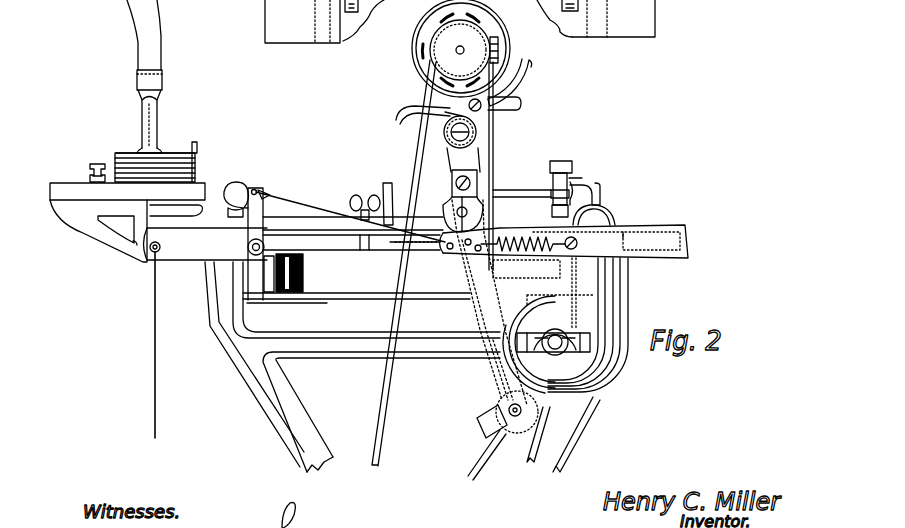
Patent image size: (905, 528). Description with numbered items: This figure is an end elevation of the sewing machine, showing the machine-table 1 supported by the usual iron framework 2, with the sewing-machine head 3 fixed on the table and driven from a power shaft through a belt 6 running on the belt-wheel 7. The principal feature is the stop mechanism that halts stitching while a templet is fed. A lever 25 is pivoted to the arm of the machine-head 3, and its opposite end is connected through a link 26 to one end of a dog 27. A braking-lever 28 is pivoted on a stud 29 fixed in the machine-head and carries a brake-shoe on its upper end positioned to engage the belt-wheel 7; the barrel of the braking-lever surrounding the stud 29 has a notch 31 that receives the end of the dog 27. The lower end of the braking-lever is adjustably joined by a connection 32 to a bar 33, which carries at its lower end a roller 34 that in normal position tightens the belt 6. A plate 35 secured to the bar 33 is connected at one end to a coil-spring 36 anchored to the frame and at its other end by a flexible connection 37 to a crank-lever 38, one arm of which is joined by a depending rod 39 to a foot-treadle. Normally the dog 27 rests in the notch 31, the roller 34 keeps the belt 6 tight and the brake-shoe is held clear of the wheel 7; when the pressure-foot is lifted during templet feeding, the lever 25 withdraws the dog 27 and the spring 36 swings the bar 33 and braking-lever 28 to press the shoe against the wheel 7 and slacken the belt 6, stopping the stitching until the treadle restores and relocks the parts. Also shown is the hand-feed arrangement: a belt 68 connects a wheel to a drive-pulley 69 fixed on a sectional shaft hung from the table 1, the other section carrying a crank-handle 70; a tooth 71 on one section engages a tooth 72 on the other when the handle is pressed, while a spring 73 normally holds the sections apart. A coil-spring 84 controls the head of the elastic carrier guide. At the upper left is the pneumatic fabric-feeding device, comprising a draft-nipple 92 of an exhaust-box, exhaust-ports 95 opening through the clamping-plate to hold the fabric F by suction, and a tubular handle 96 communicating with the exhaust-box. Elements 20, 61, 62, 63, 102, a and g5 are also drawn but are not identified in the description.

The machine-table 1 is at (688, 238).
The iron framework 2 is at (283, 423).
The sewing-machine head 3 is at (478, 158).
The belt 6 is at (385, 403).
The belt-wheel 7 is at (507, 28).
The arm 20 is at (500, 103).
The lever 25 is at (498, 45).
The link 26 is at (513, 62).
The dog 27 is at (450, 110).
The braking-lever 28 is at (500, 105).
The stud 29 is at (476, 130).
The notch 31 is at (447, 117).
The connection 32 is at (480, 194).
The bar 33 is at (483, 338).
The roller 34 is at (522, 435).
The plate 35 is at (450, 247).
The coil-spring 36 is at (598, 208).
The flexible connection 37 is at (312, 218).
The crank-lever 38 is at (197, 249).
The depending rod 39 is at (156, 336).
The post 61 is at (536, 204).
The connection 62 is at (570, 178).
The post head 63 is at (560, 161).
The belt 68 is at (367, 295).
The drive-pulley 69 is at (356, 312).
The crank-handle 70 is at (238, 178).
The tooth 71 is at (277, 265).
The tooth 72 is at (351, 253).
The spring 73 is at (293, 220).
The coil-spring 84 is at (572, 183).
The draft-nipple 92 is at (160, 94).
The exhaust-ports 95 is at (150, 148).
The handle 96 is at (150, 119).
The hook piece 102 is at (592, 197).
The fabric F is at (176, 178).
The disk a is at (460, 50).
The screw g5 is at (583, 248).